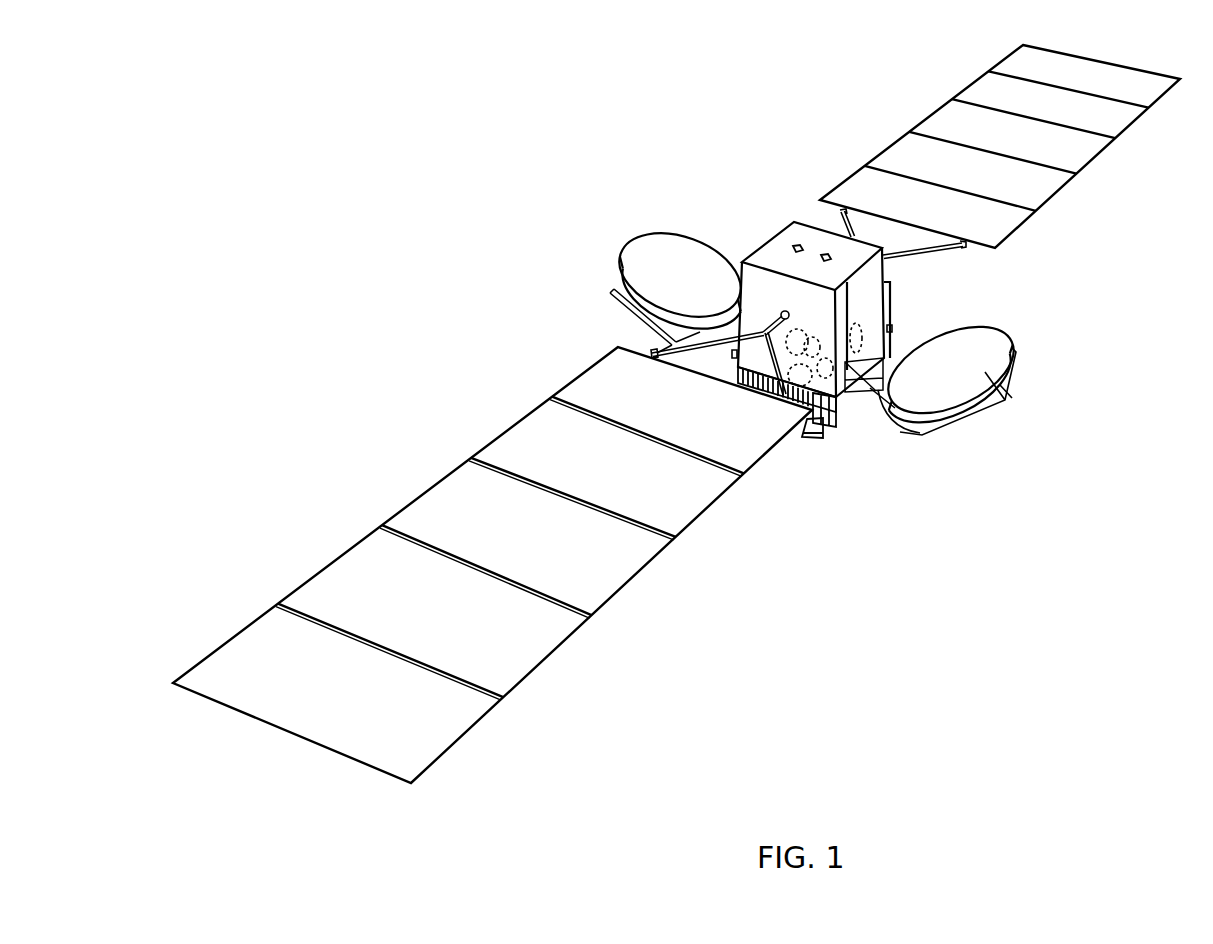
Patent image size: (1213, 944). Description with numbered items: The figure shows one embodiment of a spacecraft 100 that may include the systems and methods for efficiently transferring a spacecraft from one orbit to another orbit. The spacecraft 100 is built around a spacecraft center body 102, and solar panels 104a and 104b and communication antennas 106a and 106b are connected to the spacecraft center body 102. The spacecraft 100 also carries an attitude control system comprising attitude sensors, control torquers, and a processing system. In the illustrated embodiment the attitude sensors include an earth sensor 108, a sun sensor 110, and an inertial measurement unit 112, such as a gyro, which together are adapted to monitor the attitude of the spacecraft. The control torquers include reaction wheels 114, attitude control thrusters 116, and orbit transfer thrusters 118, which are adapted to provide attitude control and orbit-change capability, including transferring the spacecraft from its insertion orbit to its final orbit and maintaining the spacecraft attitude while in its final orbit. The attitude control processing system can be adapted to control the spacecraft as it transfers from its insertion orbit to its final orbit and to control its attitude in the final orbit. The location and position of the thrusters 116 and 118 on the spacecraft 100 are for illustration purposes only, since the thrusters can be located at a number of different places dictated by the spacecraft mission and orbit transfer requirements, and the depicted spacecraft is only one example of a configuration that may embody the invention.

The spacecraft 100 is at (497, 195).
The spacecraft center body 102 is at (772, 248).
The solar panel 104a is at (682, 493).
The solar panel 104b is at (1080, 143).
The communication antenna 106a is at (682, 252).
The communication antenna 106b is at (928, 395).
The earth sensor 108 is at (795, 245).
The sun sensor 110 is at (833, 259).
The inertial measurement unit 112 is at (808, 335).
The reaction wheels 114 is at (835, 430).
The attitude control thrusters 116 is at (730, 352).
The orbit transfer thrusters 118 is at (820, 453).